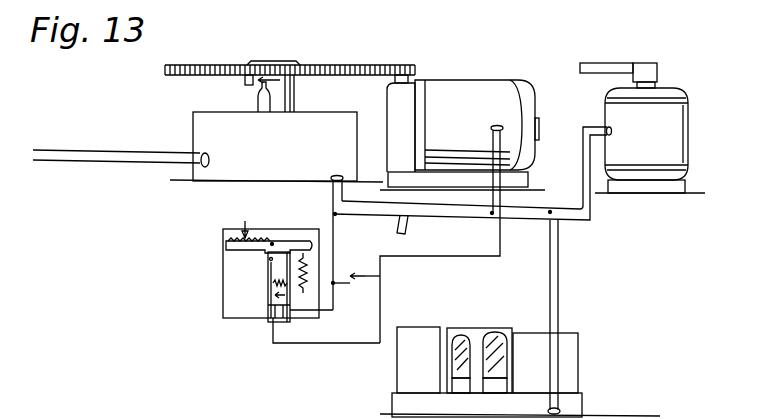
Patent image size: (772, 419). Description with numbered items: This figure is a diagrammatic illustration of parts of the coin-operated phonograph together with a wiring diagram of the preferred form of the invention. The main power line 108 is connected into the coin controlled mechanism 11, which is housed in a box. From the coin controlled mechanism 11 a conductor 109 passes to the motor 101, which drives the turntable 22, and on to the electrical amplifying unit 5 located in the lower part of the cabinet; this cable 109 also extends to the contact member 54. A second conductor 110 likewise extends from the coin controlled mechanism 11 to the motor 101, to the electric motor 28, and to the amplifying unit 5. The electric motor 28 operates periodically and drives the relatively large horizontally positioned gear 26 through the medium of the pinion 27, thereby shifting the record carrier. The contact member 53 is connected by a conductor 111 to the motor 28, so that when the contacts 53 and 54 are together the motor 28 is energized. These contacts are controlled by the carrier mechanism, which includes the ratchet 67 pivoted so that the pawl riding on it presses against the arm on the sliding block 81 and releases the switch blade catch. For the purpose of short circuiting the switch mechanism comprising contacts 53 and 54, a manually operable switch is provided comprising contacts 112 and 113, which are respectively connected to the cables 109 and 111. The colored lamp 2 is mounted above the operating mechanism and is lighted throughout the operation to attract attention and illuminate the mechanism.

The main power line 108 is at (117, 165).
The coin controlled mechanism 11 is at (280, 163).
The gear 26 is at (349, 74).
The pinion 27 is at (412, 74).
The electric motor 28 is at (482, 90).
The turntable 22 is at (593, 63).
The motor 101 is at (665, 151).
The conductor 110 is at (373, 196).
The conductor 109 is at (333, 240).
The colored lamp 2 is at (406, 233).
The sliding block 81 is at (238, 285).
The ratchet 67 is at (228, 247).
The contact 54 is at (285, 322).
The contact 53 is at (271, 321).
The contact 113 is at (346, 280).
The contact 112 is at (380, 276).
The conductor 111 is at (352, 344).
The electrical amplifying unit 5 is at (565, 370).